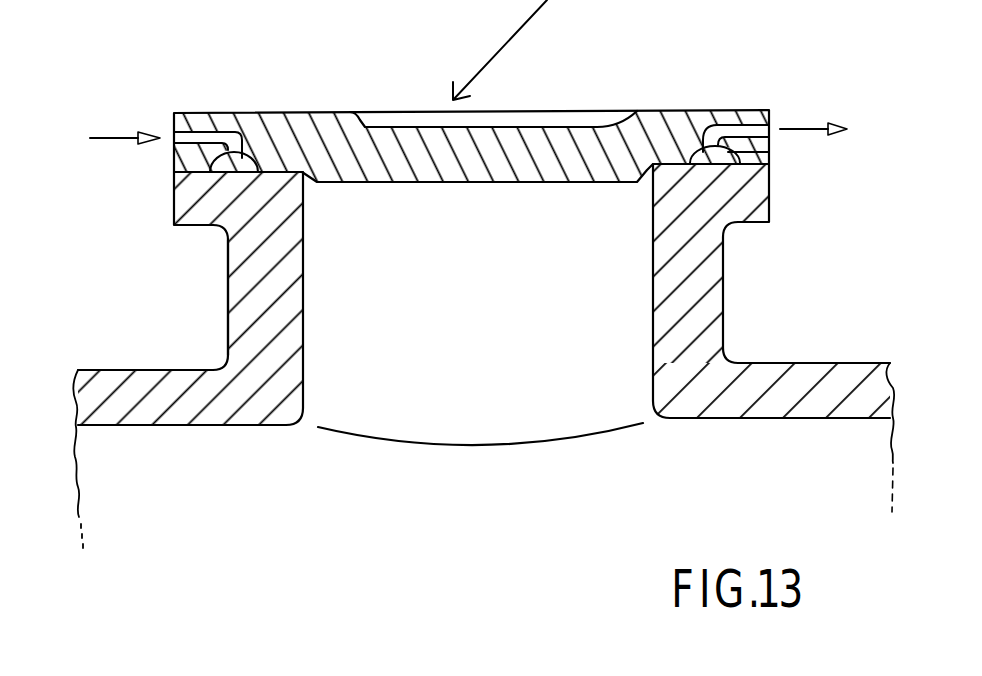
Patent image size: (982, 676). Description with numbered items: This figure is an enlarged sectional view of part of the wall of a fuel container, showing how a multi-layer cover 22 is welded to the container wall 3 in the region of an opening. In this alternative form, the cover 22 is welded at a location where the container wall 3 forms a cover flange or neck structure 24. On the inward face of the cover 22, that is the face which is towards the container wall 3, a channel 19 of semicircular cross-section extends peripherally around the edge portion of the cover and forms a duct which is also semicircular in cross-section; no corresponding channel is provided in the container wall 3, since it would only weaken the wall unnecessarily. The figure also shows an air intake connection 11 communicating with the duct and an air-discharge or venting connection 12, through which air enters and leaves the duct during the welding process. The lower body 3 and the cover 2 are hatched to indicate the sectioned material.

The cover plate 2 is at (280, 167).
The container wall 3 is at (178, 428).
The air intake connection 11 is at (186, 138).
The air-discharge or venting connection 12 is at (766, 128).
The channel 19 is at (724, 158).
The multi-layer cover 22 is at (271, 113).
The cover flange or neck structure 24 is at (203, 303).